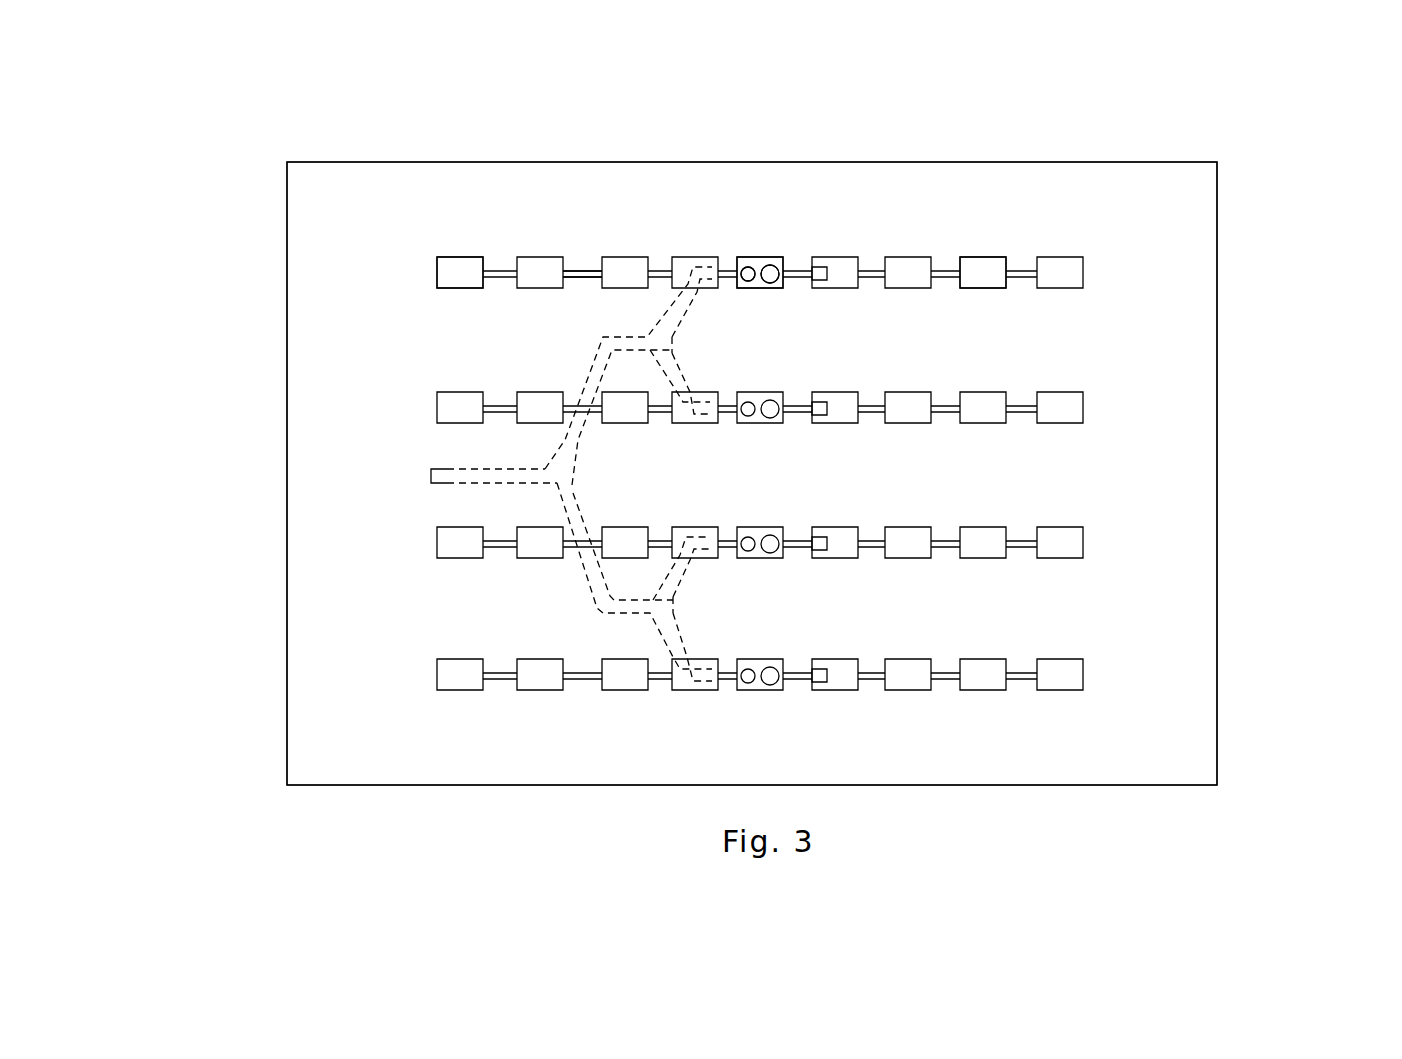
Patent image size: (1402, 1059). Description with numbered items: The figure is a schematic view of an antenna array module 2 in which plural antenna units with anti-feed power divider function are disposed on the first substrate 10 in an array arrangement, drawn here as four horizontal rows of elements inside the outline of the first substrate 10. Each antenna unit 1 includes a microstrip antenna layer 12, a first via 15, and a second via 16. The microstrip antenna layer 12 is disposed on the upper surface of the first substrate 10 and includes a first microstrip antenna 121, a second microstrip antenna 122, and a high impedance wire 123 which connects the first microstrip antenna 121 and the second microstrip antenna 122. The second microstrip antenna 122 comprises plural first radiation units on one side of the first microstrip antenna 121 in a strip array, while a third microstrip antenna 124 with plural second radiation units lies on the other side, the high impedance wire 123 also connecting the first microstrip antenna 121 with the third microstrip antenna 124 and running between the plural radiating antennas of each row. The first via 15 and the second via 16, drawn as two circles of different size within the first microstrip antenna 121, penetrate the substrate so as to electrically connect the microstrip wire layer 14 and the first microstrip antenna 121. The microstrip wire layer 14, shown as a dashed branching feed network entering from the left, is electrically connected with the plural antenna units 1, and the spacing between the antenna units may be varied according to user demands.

The antenna array module 2 is at (1229, 157).
The first substrate 10 is at (1160, 328).
The antenna unit 1 is at (890, 446).
The microstrip antenna layer 12 is at (1090, 257).
The second microstrip antenna 122 is at (465, 250).
The high impedance wire 123 is at (577, 271).
The third microstrip antenna 124 is at (986, 256).
The first microstrip antenna 121 is at (784, 257).
The second via 16 is at (747, 266).
The first via 15 is at (771, 264).
The microstrip wire layer 14 is at (435, 476).